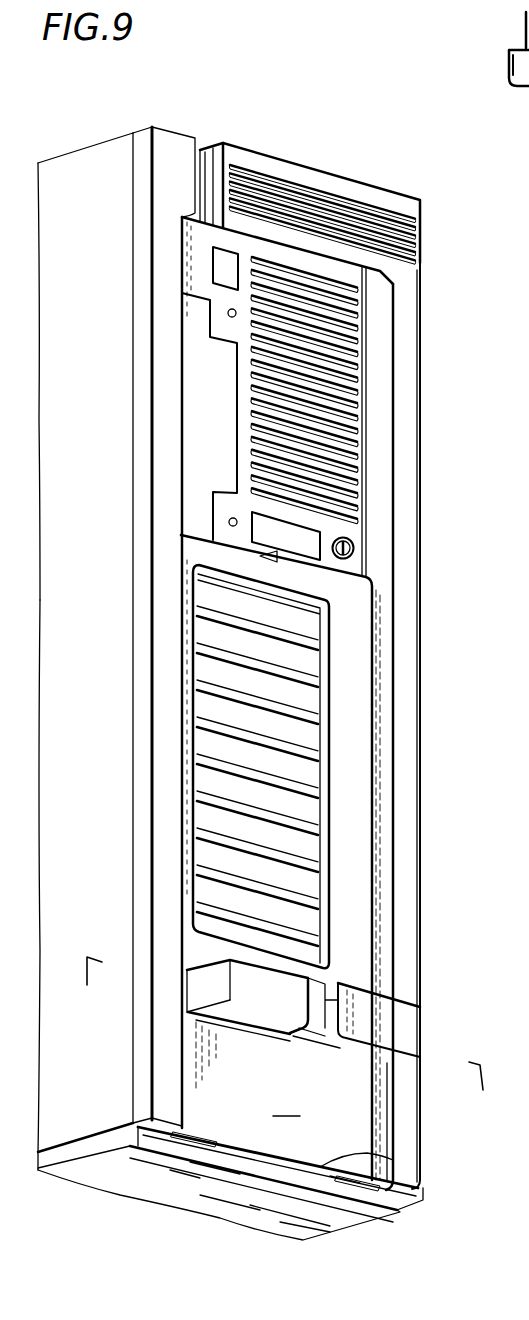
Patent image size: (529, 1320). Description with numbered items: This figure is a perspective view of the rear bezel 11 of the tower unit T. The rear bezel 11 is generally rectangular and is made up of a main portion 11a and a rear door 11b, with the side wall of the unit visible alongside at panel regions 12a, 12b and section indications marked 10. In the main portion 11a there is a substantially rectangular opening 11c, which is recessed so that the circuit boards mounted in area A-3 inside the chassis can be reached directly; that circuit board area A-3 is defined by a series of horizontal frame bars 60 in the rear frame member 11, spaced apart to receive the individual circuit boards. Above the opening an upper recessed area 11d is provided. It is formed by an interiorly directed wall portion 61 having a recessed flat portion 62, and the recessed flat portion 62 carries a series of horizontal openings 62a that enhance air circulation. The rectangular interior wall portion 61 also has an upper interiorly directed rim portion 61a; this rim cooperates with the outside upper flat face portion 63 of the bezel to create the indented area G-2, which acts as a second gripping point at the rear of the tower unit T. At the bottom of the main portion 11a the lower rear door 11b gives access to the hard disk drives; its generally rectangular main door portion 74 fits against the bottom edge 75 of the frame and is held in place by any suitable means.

The section line 10 is at (285, 1035).
The rear bezel 11 is at (421, 477).
The main portion 11a is at (165, 520).
The rear door 11b is at (374, 1128).
The rectangular opening 11c is at (197, 678).
The upper recessed area 11d is at (381, 373).
The upper side wall panel 12a is at (96, 143).
The lower side wall panel 12b is at (118, 441).
The tower unit T is at (170, 125).
The horizontal frame bars 60 is at (303, 667).
The interiorly directed wall portion 61 is at (377, 447).
The upper interiorly directed rim portion 61a is at (293, 253).
The recessed flat portion 62 is at (354, 530).
The horizontal openings 62a is at (344, 503).
The outside upper flat face portion 63 is at (250, 160).
The main door portion 74 is at (303, 1038).
The bottom edge 75 is at (421, 1183).
The circuit board area A-3 is at (297, 626).
The indented gripping area G-2 is at (384, 275).